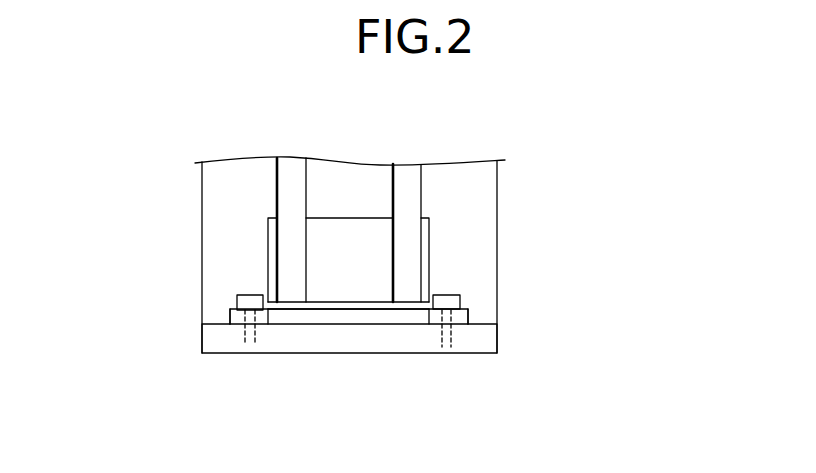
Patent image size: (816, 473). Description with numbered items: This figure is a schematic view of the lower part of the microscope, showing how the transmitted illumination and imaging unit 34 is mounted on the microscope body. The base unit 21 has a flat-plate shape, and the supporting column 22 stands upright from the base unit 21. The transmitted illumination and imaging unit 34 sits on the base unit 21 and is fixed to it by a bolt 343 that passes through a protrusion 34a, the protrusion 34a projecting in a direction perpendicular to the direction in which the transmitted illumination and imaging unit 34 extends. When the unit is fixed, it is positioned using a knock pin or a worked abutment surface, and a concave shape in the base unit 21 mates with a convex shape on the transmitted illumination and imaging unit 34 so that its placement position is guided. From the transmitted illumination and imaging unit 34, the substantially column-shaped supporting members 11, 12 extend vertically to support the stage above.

The supporting member 11 is at (282, 187).
The supporting member 12 is at (357, 180).
The base unit 21 is at (395, 342).
The supporting column 22 is at (486, 234).
The transmitted illumination and imaging unit 34 is at (330, 318).
The protrusion 34a is at (232, 318).
The bolt 343 is at (252, 295).